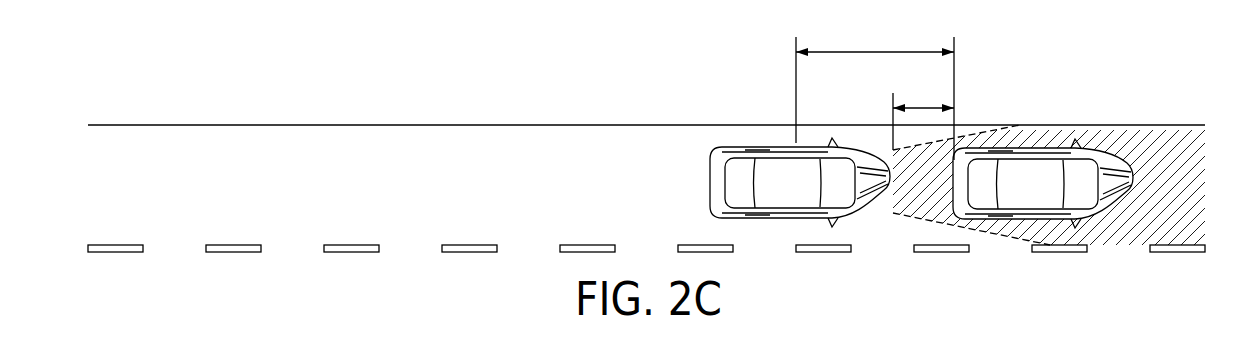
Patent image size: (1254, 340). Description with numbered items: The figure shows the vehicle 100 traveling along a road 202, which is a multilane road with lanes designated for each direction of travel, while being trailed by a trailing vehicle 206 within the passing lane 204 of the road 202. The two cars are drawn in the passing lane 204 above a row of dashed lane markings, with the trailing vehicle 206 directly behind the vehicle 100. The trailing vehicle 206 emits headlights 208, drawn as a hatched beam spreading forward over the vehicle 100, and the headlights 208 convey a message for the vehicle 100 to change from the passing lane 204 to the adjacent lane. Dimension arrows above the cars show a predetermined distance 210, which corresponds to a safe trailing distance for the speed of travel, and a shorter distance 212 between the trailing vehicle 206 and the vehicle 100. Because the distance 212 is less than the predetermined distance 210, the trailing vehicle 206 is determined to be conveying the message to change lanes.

The vehicle 100 is at (1107, 165).
The road 202 is at (174, 114).
The passing lane 204 is at (384, 153).
The trailing vehicle 206 is at (868, 200).
The headlights 208 is at (1033, 137).
The predetermined distance 210 is at (874, 52).
The distance 212 is at (928, 108).